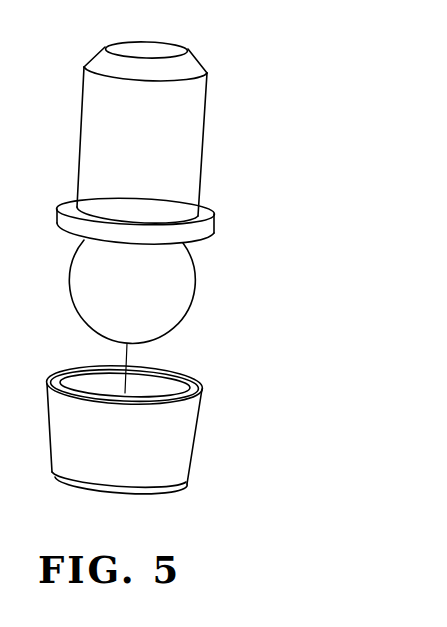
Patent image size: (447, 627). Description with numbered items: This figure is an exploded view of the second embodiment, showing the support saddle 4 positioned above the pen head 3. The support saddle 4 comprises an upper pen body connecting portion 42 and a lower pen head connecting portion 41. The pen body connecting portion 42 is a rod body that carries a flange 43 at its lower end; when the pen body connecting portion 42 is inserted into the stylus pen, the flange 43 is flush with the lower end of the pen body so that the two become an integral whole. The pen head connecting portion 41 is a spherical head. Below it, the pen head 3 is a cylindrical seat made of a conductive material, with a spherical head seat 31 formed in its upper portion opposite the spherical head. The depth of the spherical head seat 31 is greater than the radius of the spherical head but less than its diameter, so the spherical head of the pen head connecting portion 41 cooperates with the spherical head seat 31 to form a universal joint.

The pen head 3 is at (178, 421).
The spherical head seat 31 is at (160, 388).
The support saddle 4 is at (215, 217).
The pen head connecting portion 41 is at (192, 316).
The pen body connecting portion 42 is at (185, 160).
The flange 43 is at (197, 233).